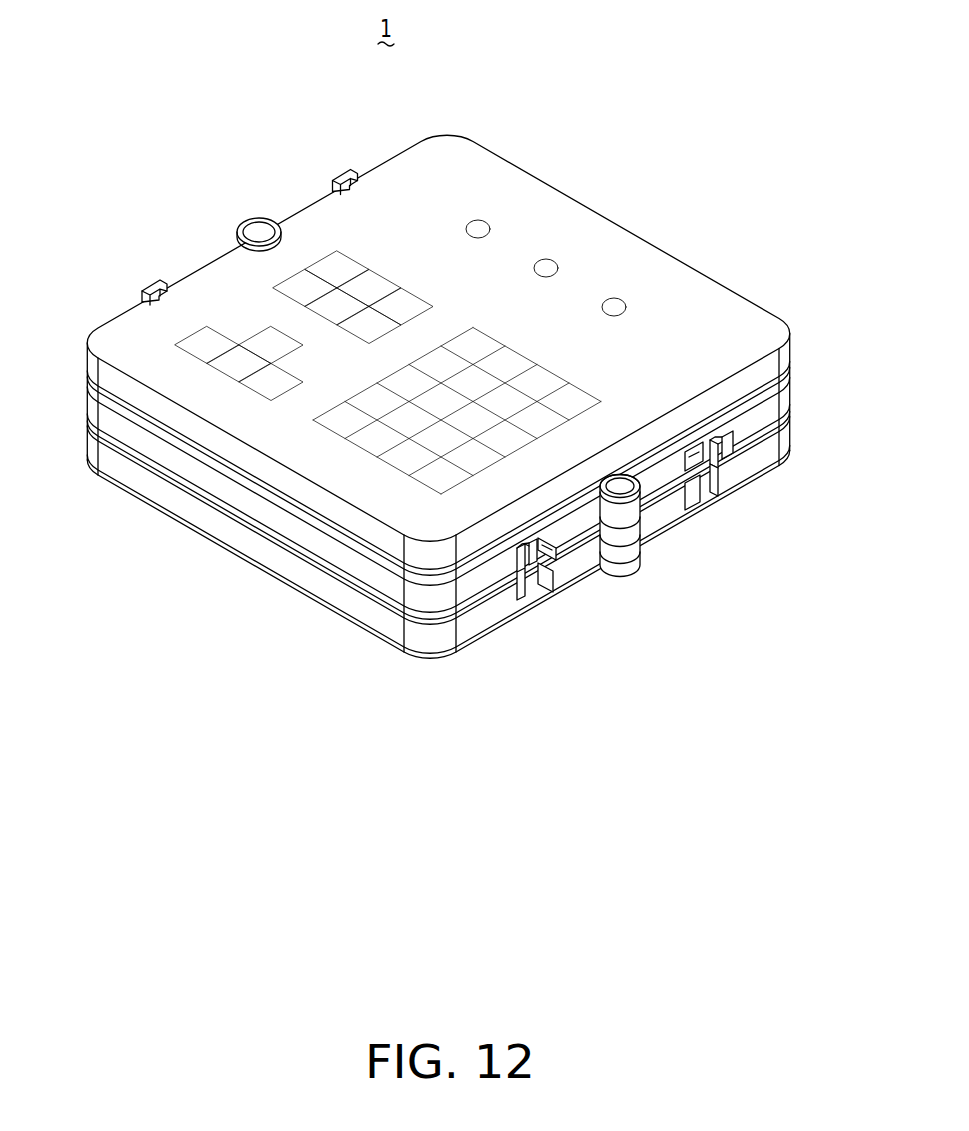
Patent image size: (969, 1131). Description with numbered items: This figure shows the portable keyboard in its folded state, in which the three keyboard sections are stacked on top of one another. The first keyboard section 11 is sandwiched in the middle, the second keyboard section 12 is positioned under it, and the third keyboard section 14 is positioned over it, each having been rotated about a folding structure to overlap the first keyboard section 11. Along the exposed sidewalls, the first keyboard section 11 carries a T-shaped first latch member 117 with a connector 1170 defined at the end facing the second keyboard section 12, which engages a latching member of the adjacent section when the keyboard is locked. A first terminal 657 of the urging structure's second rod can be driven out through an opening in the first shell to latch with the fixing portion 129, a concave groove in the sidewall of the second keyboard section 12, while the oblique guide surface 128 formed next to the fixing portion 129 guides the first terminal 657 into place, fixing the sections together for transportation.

The first keyboard section 11 is at (305, 537).
The second keyboard section 12 is at (190, 510).
The third keyboard section 14 is at (132, 332).
The first latch member 117 is at (722, 460).
The connector 1170 is at (735, 447).
The first terminal 657 is at (697, 455).
The guide surface 128 is at (553, 570).
The fixing portion 129 is at (540, 587).